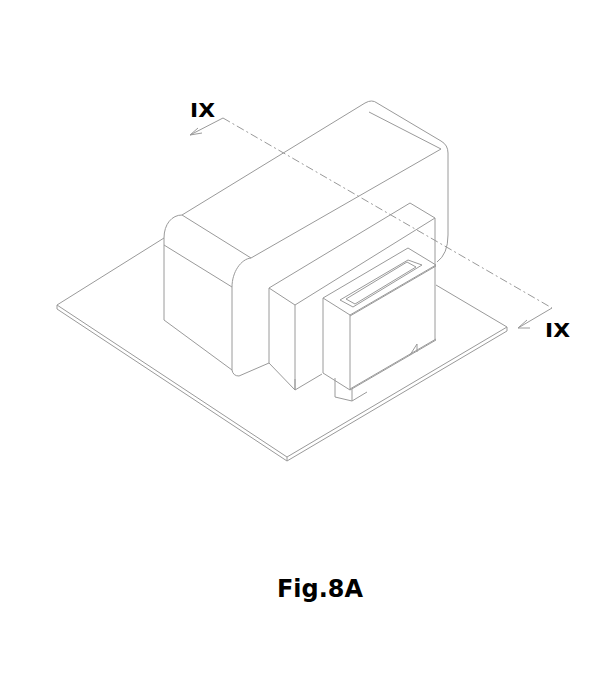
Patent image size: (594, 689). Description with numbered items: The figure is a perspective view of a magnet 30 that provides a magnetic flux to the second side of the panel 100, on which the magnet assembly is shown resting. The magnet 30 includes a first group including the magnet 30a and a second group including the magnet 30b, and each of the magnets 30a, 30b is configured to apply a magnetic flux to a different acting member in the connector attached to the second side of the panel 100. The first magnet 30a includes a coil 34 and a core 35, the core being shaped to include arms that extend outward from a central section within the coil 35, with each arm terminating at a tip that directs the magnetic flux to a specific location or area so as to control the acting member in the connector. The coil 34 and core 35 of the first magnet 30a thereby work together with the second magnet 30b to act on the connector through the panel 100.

The magnet 30 is at (322, 239).
The first magnet 30a is at (163, 188).
The second magnet 30b is at (454, 273).
The coil 34 is at (285, 370).
The core 35 is at (187, 273).
The panel 100 is at (311, 421).